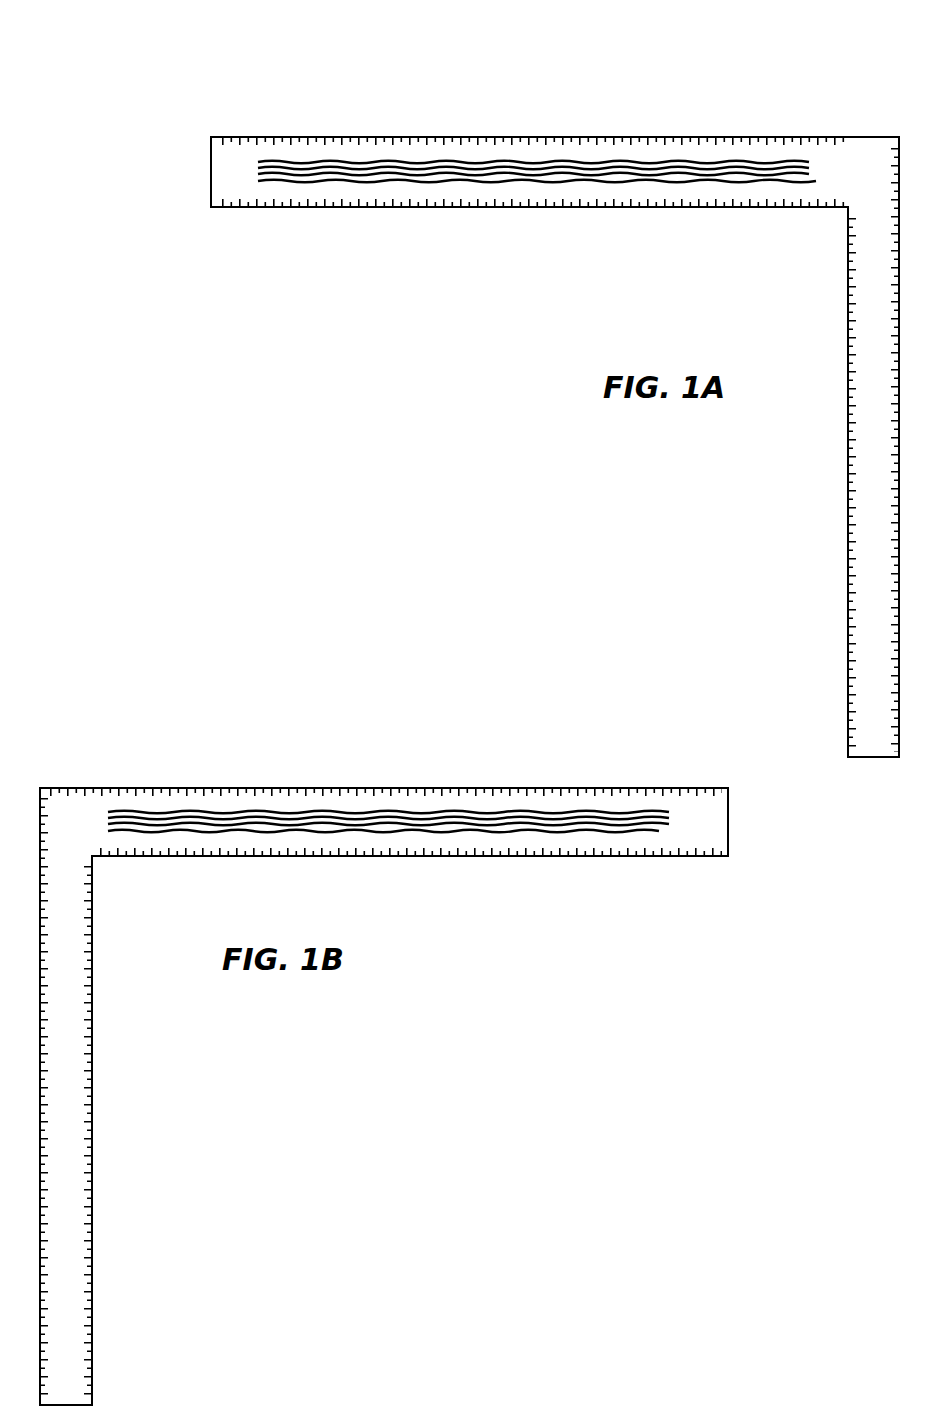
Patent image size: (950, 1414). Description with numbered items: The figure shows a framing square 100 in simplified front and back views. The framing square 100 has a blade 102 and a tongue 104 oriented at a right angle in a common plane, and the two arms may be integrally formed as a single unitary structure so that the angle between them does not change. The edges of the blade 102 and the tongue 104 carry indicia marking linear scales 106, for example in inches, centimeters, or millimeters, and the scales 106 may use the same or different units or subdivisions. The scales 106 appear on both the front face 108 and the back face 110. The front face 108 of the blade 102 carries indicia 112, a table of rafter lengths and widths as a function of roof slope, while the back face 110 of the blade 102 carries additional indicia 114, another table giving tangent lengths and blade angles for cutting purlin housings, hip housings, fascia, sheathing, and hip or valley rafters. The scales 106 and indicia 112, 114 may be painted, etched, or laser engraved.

In FIG. 1A, the framing square 100 is at (694, 102).
In FIG. 1B, the framing square 100 is at (160, 742).
In FIG. 1A, the blade 102 is at (374, 137).
In FIG. 1B, the blade 102 is at (458, 793).
In FIG. 1A, the tongue 104 is at (848, 512).
In FIG. 1B, the tongue 104 is at (93, 1275).
In FIG. 1A, the scales 106 is at (489, 147).
In FIG. 1B, the scales 106 is at (85, 1130).
In FIG. 1A, the front face 108 is at (247, 190).
In FIG. 1B, the back face 110 is at (702, 838).
In FIG. 1A, the indicia 112 is at (383, 180).
In FIG. 1B, the additional indicia 114 is at (512, 831).